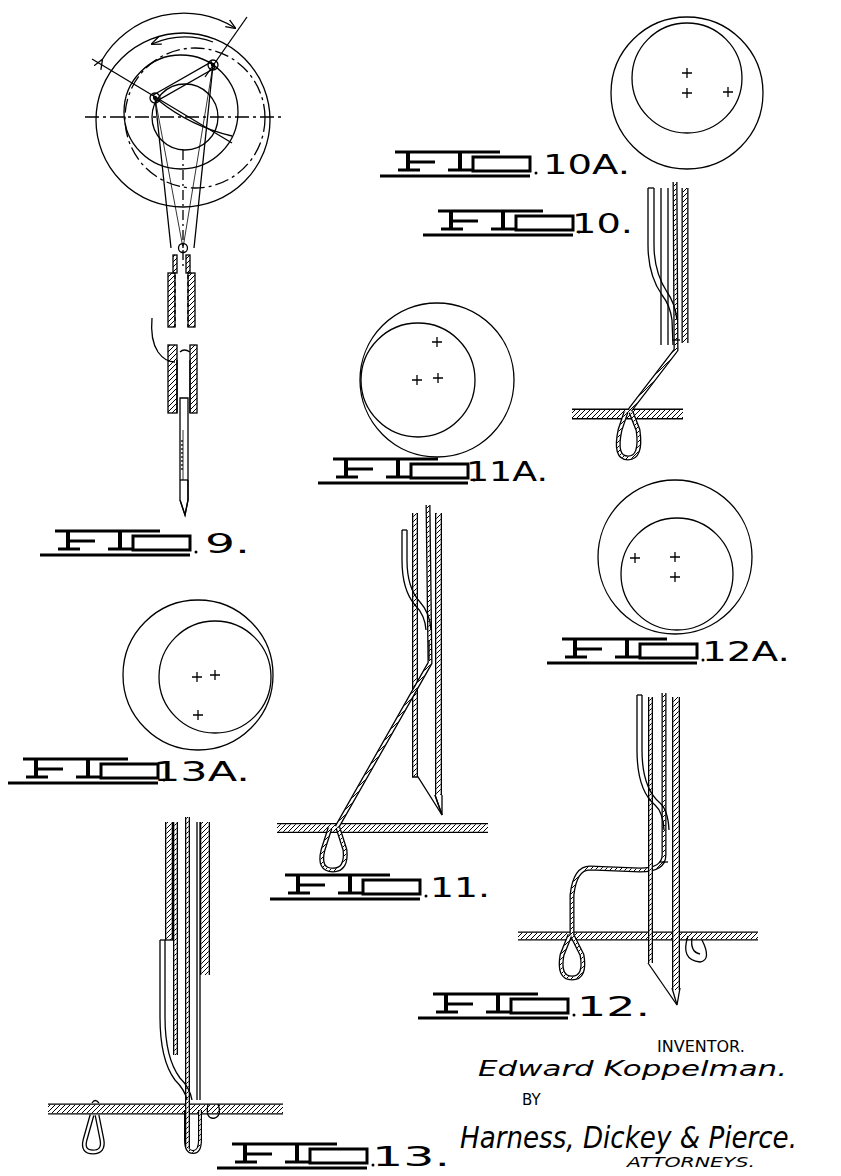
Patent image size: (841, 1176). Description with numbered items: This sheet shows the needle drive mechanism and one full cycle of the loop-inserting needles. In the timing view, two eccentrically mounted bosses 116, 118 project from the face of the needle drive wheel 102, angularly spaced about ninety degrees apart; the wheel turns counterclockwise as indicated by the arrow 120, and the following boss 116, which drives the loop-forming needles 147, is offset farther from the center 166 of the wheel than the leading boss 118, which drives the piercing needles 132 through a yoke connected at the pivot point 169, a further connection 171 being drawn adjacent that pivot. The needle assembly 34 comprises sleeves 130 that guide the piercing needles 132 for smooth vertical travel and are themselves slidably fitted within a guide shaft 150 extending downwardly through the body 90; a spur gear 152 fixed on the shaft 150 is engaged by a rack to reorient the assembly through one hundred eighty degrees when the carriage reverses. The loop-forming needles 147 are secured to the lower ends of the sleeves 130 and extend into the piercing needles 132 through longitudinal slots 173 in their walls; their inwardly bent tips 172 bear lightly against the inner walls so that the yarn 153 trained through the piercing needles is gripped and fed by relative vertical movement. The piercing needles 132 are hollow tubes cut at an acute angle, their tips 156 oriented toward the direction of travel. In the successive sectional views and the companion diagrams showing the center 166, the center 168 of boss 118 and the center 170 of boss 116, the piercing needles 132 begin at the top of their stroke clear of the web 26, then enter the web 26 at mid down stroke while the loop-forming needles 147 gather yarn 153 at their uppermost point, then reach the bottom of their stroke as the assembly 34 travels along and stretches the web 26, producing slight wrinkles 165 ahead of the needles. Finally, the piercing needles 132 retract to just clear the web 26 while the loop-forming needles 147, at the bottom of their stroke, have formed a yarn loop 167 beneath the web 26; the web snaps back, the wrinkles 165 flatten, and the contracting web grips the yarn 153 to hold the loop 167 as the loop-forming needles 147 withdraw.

In FIG. 10, the web 26 is at (680, 410).
In FIG. 11, the web 26 is at (484, 823).
In FIG. 12, the web 26 is at (734, 930).
In FIG. 13, the web 26 is at (260, 1103).
In FIG. 9, the needle assembly 34 is at (210, 306).
In FIG. 9, the body 90 is at (168, 36).
In FIG. 9, the needle drive wheel 102 is at (272, 70).
In FIG. 10A, the needle drive wheel 102 is at (611, 95).
In FIG. 11A, the needle drive wheel 102 is at (502, 336).
In FIG. 12A, the needle drive wheel 102 is at (596, 572).
In FIG. 13A, the needle drive wheel 102 is at (122, 663).
In FIG. 9, the following boss 116 is at (220, 63).
In FIG. 9, the leading boss 118 is at (149, 99).
In FIG. 9, the arrow 120 is at (165, 54).
In FIG. 9, the sleeves 130 is at (168, 303).
In FIG. 13, the sleeves 130 is at (212, 940).
In FIG. 9, the piercing needles 132 is at (190, 452).
In FIG. 10, the piercing needles 132 is at (690, 260).
In FIG. 11, the piercing needles 132 is at (443, 562).
In FIG. 12, the piercing needles 132 is at (682, 896).
In FIG. 13, the piercing needles 132 is at (203, 1008).
In FIG. 9, the loop-forming needles 147 is at (180, 443).
In FIG. 10, the loop-forming needles 147 is at (650, 255).
In FIG. 11, the loop-forming needles 147 is at (402, 556).
In FIG. 12, the loop-forming needles 147 is at (640, 778).
In FIG. 13, the loop-forming needles 147 is at (160, 1003).
In FIG. 9, the guide shaft 150 is at (190, 490).
In FIG. 11, the spur gear 152 is at (440, 652).
In FIG. 10, the yarn 153 is at (680, 185).
In FIG. 11, the yarn 153 is at (432, 508).
In FIG. 12, the yarn 153 is at (618, 814).
In FIG. 13, the yarn 153 is at (192, 817).
In FIG. 9, the tips of the piercing needles 156 is at (192, 514).
In FIG. 11, the tips of the piercing needles 156 is at (446, 805).
In FIG. 12, the wrinkles 165 is at (700, 958).
In FIG. 13, the wrinkles 165 is at (215, 1103).
In FIG. 9, the center of the drive wheel 166 is at (215, 125).
In FIG. 10A, the center of the drive wheel 166 is at (682, 93).
In FIG. 11A, the center of the drive wheel 166 is at (434, 376).
In FIG. 12A, the center of the drive wheel 166 is at (692, 540).
In FIG. 13A, the center of the drive wheel 166 is at (197, 674).
In FIG. 10, the yarn loop 167 is at (628, 460).
In FIG. 11, the yarn loop 167 is at (348, 858).
In FIG. 12, the yarn loop 167 is at (560, 962).
In FIG. 13, the yarn loop 167 is at (104, 1148).
In FIG. 10A, the center of the eccentric boss 118 168 is at (687, 72).
In FIG. 11A, the center of the eccentric boss 118 168 is at (416, 383).
In FIG. 12A, the center of the eccentric boss 118 168 is at (677, 580).
In FIG. 13A, the center of the eccentric boss 118 168 is at (236, 665).
In FIG. 9, the pivot point 169 is at (177, 249).
In FIG. 10A, the center of the eccentric boss 116 170 is at (727, 89).
In FIG. 11A, the center of the eccentric boss 116 170 is at (433, 342).
In FIG. 12A, the center of the eccentric boss 116 170 is at (636, 560).
In FIG. 13A, the center of the eccentric boss 116 170 is at (202, 714).
In FIG. 9, the link arm 171 is at (190, 258).
In FIG. 9, the tips of the loop-forming needles 172 is at (180, 487).
In FIG. 10, the tips of the loop-forming needles 172 is at (674, 347).
In FIG. 12, the tips of the loop-forming needles 172 is at (662, 856).
In FIG. 9, the longitudinal slots 173 is at (180, 470).
In FIG. 11, the longitudinal slots 173 is at (412, 635).
In FIG. 12, the longitudinal slots 173 is at (648, 830).
In FIG. 13, the longitudinal slots 173 is at (166, 887).